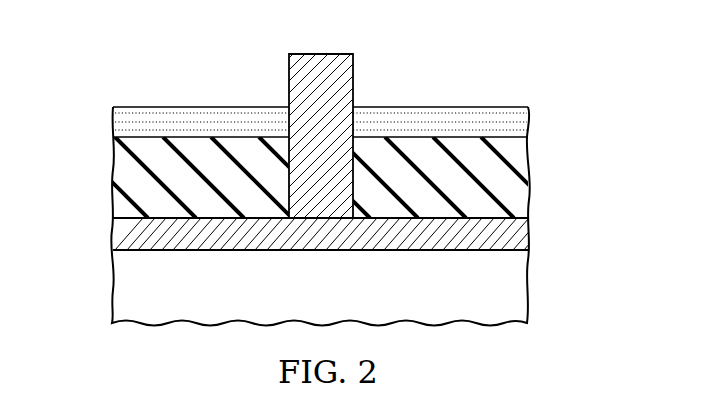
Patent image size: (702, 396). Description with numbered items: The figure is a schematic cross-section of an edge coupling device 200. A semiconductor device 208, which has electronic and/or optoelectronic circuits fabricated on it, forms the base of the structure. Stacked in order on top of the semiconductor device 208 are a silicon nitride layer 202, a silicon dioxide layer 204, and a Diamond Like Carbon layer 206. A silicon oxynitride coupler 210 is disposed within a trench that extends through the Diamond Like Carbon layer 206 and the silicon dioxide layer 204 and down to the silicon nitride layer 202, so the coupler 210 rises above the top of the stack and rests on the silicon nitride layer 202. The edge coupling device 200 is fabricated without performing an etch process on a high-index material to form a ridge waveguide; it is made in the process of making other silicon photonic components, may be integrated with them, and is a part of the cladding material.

The edge coupling device 200 is at (320, 163).
The silicon nitride layer 202 is at (116, 237).
The silicon dioxide layer 204 is at (112, 162).
The Diamond Like Carbon layer 206 is at (115, 125).
The semiconductor device 208 is at (336, 293).
The silicon oxynitride coupler 210 is at (297, 83).